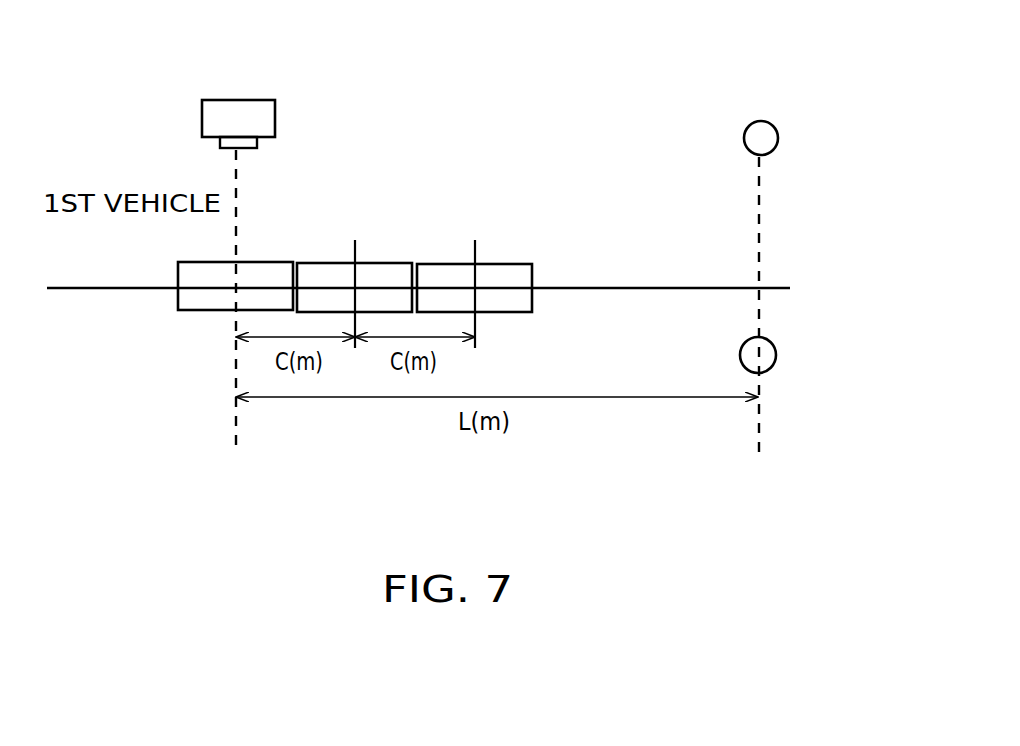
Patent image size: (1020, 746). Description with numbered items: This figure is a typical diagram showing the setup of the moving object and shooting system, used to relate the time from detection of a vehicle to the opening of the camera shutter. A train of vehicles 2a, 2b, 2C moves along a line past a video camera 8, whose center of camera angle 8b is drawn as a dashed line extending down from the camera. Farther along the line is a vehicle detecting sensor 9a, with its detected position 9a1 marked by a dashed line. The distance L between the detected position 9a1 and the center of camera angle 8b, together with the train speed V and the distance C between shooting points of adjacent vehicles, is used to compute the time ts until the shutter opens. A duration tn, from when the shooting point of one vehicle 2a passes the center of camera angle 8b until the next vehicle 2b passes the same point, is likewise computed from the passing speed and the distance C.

The video camera 8 is at (230, 108).
The center of camera angle 8b is at (237, 205).
The vehicle 2a is at (197, 262).
The vehicle 2b is at (380, 263).
The vehicle 2C is at (515, 264).
The vehicle detecting sensor 9a is at (761, 121).
The detected position 9a1 is at (758, 226).